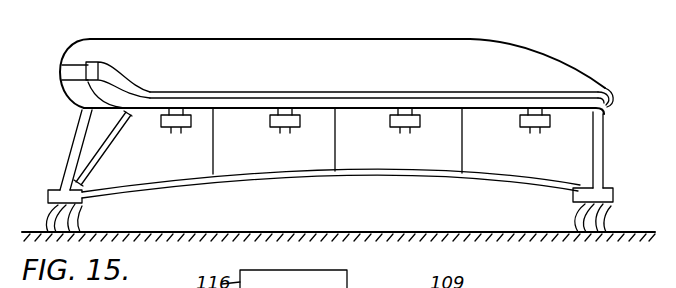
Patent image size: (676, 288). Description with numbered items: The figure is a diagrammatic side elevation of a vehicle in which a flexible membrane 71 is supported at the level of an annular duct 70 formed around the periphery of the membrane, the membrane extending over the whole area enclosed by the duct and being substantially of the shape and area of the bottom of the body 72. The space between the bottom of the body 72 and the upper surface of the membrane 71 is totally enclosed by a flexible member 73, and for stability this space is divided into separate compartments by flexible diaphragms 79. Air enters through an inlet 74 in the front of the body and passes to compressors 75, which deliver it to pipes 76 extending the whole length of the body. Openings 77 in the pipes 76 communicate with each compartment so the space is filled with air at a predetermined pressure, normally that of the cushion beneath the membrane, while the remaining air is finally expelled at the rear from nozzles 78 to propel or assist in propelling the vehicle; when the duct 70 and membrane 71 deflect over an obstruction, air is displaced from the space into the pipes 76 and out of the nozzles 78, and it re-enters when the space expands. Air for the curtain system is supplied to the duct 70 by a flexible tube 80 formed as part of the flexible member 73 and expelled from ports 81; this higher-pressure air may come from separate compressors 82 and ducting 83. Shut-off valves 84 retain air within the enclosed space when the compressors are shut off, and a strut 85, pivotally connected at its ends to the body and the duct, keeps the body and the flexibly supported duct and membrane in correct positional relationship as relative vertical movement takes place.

The annular duct 70 is at (50, 192).
The flexible membrane 71 is at (404, 178).
The body 72 is at (505, 54).
The flexible member 73 is at (80, 128).
The inlet 74 is at (66, 88).
The compressors 75 is at (80, 104).
The pipe or pipes 76 is at (238, 106).
The openings 77 is at (166, 112).
The nozzles 78 is at (617, 98).
The flexible diaphragms 79 is at (215, 148).
The flexible tube 80 is at (70, 158).
The ports 81 is at (58, 206).
The separate compressors 82 is at (100, 67).
The ducting 83 is at (196, 92).
The shut-off valves 84 is at (558, 128).
The strut 85 is at (102, 160).